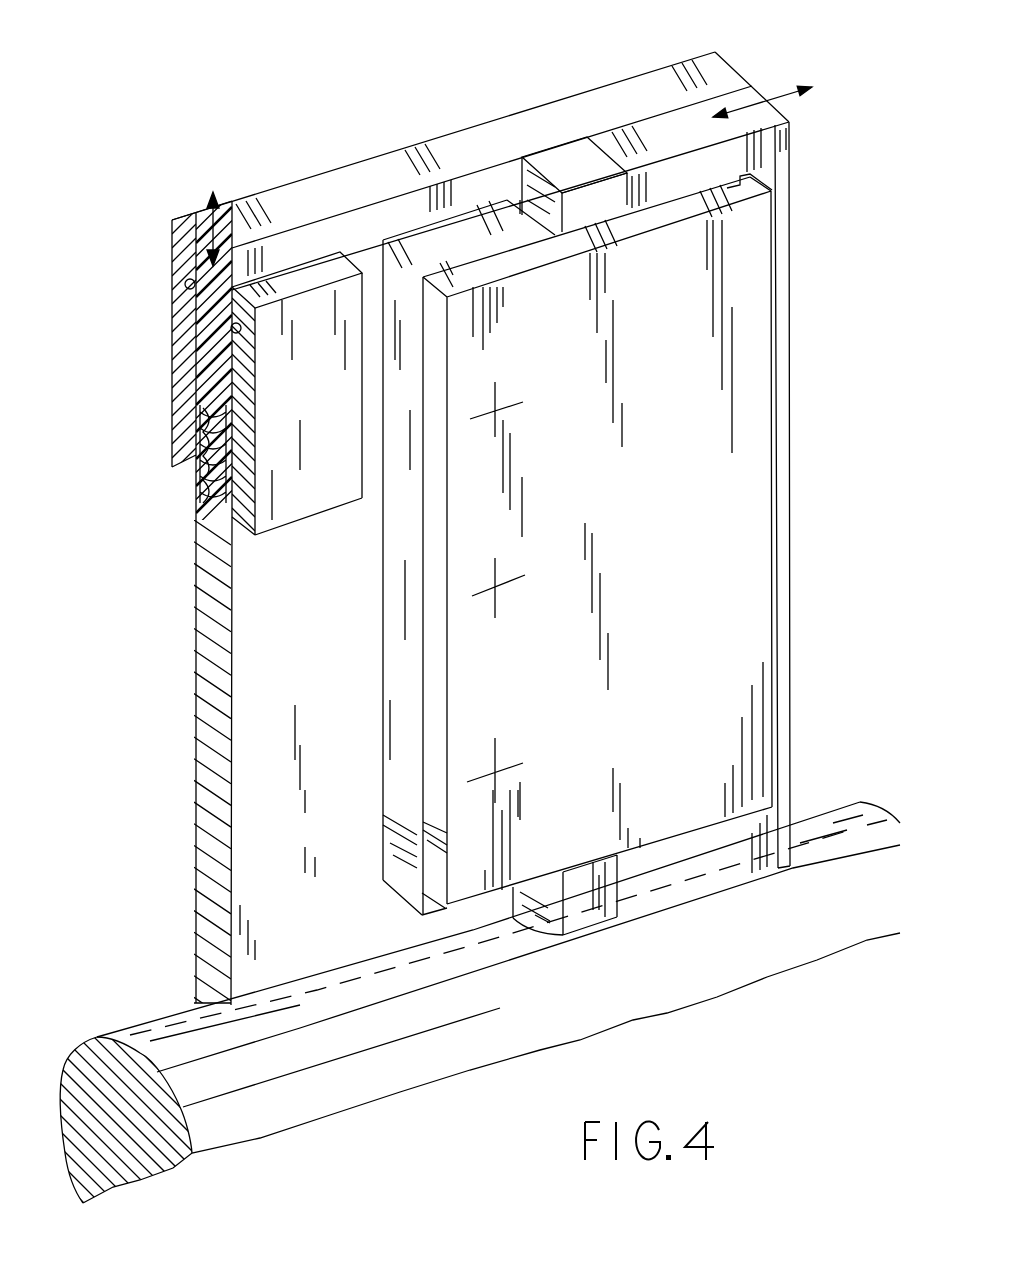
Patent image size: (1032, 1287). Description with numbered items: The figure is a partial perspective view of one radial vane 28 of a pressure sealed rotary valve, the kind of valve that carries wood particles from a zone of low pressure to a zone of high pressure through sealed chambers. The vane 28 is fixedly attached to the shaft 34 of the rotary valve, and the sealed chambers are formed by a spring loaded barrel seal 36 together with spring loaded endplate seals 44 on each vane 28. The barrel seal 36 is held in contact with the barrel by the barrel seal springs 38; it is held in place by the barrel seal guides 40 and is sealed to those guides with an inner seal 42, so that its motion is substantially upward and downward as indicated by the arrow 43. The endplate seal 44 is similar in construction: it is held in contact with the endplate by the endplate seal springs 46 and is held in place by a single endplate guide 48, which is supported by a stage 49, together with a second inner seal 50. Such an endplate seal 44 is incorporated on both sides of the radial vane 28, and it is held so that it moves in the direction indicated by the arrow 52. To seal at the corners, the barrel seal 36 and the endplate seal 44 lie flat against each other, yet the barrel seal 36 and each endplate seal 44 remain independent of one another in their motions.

The vane 28 is at (289, 668).
The shaft 34 is at (604, 988).
The barrel seal 36 is at (337, 187).
The barrel seal springs 38 is at (172, 470).
The barrel seal guides 40 is at (172, 362).
The inner seal 42 is at (184, 287).
The arrow 43 is at (202, 214).
The endplate seal 44 is at (783, 166).
The endplate seal springs 46 is at (505, 412).
The endplate guide 48 is at (754, 462).
The stage 49 is at (382, 732).
The second inner seal 50 is at (750, 176).
The arrow 52 is at (760, 100).